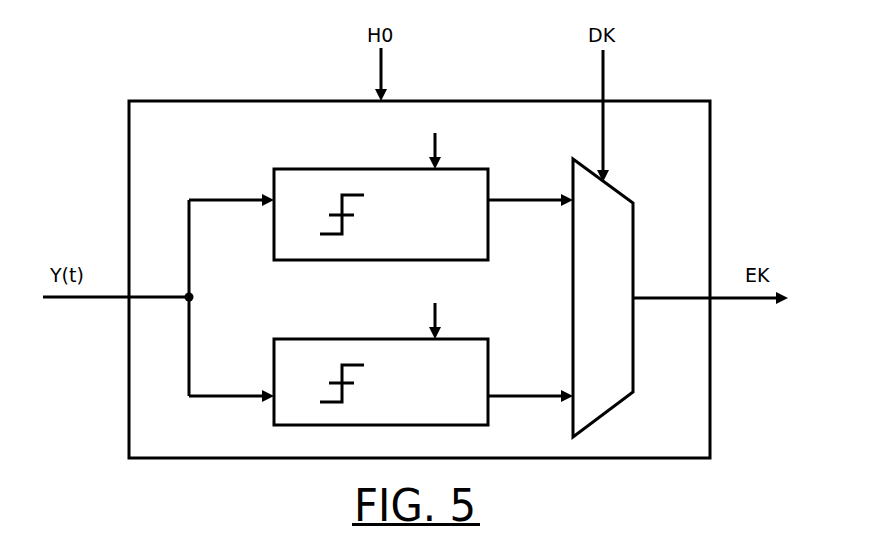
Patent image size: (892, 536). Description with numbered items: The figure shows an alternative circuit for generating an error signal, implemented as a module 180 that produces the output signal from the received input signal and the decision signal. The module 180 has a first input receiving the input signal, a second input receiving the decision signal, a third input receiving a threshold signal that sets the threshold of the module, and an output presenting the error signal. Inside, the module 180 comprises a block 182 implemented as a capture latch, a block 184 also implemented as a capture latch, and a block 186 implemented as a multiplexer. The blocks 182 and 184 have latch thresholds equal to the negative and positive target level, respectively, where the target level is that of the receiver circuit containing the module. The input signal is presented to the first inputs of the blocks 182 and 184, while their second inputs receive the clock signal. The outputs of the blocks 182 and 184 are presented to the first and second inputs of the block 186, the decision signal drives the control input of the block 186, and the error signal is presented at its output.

The module 180 is at (216, 100).
The capture latch 182 is at (350, 169).
The capture latch 184 is at (350, 339).
The multiplexer 186 is at (605, 413).